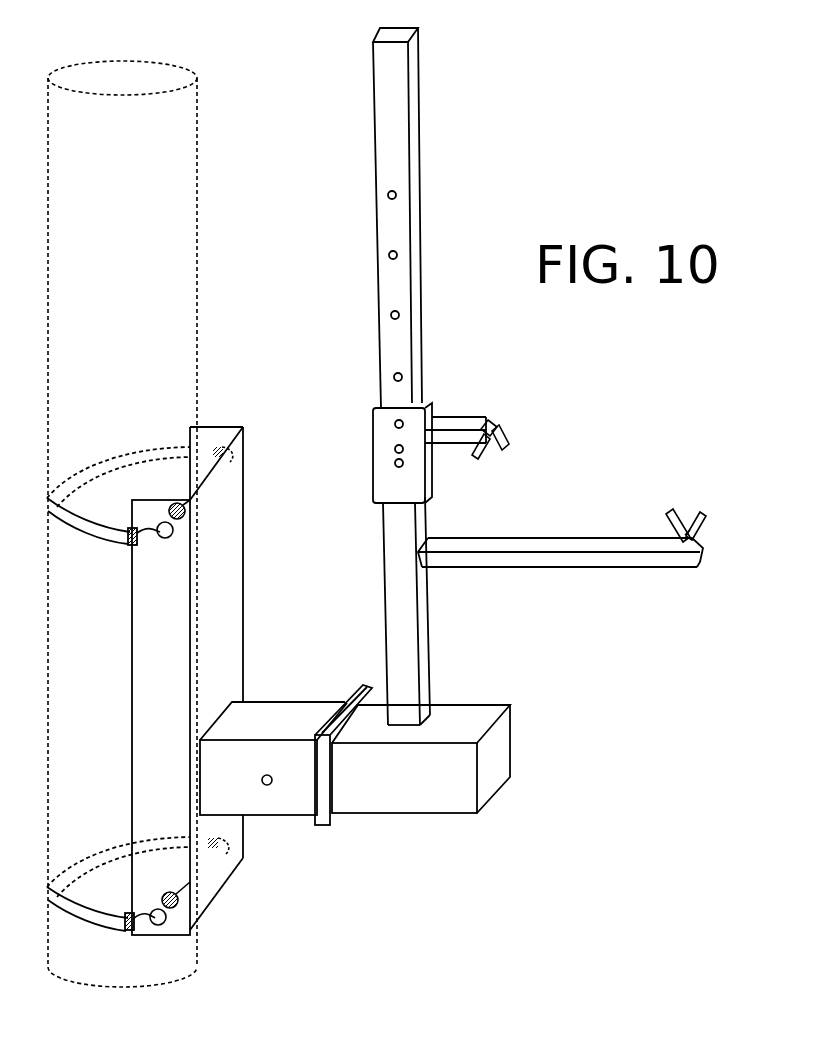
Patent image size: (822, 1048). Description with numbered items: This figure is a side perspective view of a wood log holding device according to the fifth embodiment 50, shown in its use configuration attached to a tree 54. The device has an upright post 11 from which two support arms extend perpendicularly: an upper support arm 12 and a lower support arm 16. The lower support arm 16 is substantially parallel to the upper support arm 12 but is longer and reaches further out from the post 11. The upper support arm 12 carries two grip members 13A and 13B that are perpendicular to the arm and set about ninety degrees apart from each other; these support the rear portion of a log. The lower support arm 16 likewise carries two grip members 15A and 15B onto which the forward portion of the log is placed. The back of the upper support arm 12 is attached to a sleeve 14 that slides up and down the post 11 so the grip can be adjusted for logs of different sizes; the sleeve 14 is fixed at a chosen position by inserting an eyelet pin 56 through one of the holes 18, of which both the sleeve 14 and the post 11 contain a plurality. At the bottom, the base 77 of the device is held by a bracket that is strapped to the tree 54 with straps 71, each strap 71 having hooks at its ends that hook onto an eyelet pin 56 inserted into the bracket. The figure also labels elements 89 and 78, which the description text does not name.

The wood log holding device embodiment 50 is at (267, 115).
The tree 54 is at (150, 285).
The mounting plate 89 is at (153, 542).
The strap 71 is at (98, 532).
The eyelet pin 56 is at (168, 535).
The post 11 is at (395, 166).
The sleeve 14 is at (402, 473).
The upper support arm 12 is at (448, 428).
The grip member 13A is at (500, 435).
The grip member 13B is at (481, 451).
The lower support arm 16 is at (565, 567).
The grip member 15A is at (700, 522).
The grip member 15B is at (679, 534).
The mounting block 78 is at (296, 805).
The holes 18 is at (268, 774).
The base 77 is at (410, 790).